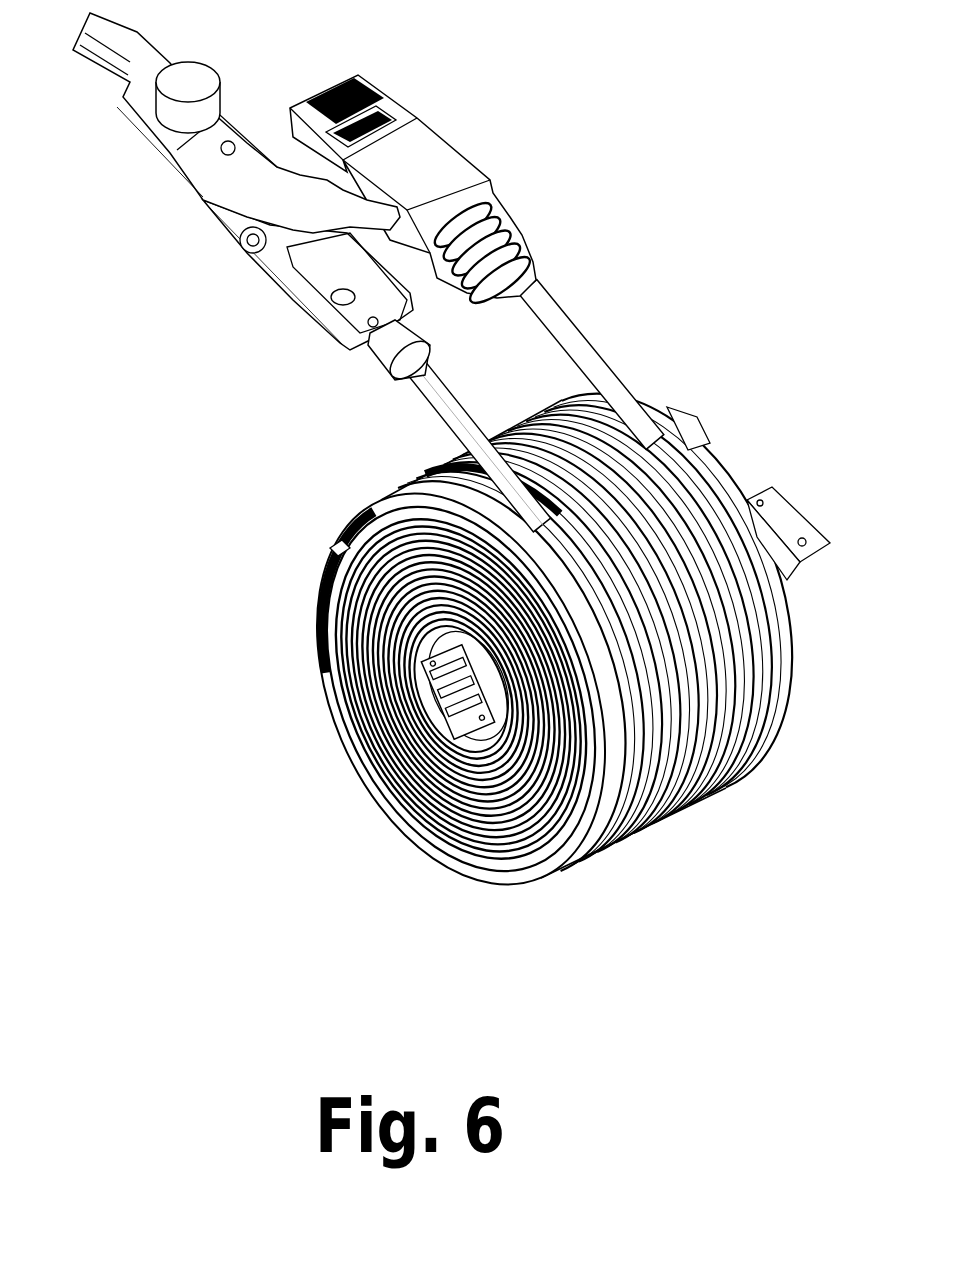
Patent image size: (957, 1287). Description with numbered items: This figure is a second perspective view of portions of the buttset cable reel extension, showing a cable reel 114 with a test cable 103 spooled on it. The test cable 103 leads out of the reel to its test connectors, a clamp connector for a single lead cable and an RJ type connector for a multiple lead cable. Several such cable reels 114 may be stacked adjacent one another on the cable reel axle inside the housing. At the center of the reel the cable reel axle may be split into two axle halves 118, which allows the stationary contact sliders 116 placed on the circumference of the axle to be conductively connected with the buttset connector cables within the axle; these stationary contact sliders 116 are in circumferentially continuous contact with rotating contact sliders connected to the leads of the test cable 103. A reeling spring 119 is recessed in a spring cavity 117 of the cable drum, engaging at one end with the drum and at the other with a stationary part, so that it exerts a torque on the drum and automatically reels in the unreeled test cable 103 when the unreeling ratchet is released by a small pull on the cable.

The test cable 103 is at (505, 513).
The cable reel 114 is at (628, 897).
The stationary contact slider 116 is at (437, 688).
The spring cavity 117 is at (370, 513).
The axle half 118 is at (447, 717).
The reeling spring 119 is at (489, 852).